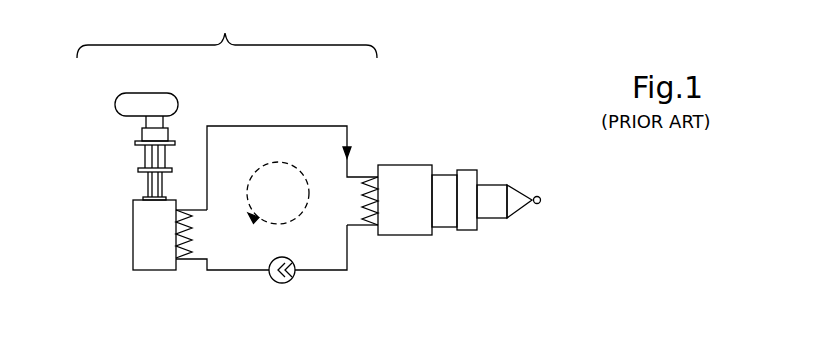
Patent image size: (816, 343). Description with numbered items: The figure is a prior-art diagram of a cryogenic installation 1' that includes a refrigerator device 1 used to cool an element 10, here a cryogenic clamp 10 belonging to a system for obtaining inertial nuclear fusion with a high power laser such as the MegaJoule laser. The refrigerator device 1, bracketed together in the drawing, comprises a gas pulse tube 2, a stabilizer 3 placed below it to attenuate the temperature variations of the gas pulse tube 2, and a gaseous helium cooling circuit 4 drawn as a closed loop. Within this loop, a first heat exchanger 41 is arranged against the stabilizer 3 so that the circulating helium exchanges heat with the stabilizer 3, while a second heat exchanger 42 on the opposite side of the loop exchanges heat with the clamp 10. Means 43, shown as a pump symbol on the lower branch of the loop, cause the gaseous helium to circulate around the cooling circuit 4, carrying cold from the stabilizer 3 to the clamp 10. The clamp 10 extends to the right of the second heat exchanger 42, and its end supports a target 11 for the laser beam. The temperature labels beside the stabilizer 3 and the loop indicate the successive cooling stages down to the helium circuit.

The refrigerator device 1 is at (227, 32).
The cryogenic installation 1' is at (452, 82).
The gas pulse tube 2 is at (155, 84).
The stabilizer 3 is at (118, 256).
The gaseous helium cooling circuit 4 is at (313, 116).
The cryogenic clamp 10 is at (455, 248).
The target 11 is at (538, 221).
The first heat exchanger 41 is at (195, 272).
The second heat exchanger 42 is at (360, 240).
The means for causing gaseous helium to circulate 43 is at (291, 292).